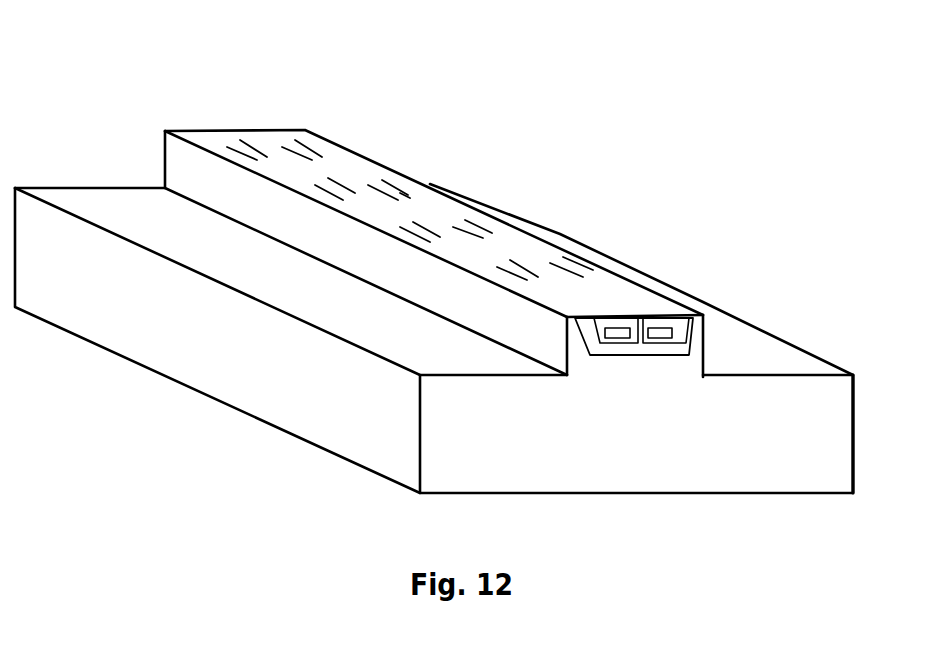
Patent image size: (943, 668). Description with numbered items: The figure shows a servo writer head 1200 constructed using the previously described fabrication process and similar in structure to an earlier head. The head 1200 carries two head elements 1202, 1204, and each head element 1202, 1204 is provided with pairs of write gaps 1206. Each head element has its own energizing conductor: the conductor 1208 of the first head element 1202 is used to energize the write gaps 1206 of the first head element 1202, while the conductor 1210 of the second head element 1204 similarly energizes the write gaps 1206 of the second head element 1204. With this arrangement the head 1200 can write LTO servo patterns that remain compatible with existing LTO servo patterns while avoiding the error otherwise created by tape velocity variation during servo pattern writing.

The servo writer head 1200 is at (441, 283).
The first head element 1202 is at (614, 381).
The second head element 1204 is at (658, 381).
The write gap 1206 is at (324, 138).
The conductor of the first head element 1208 is at (612, 336).
The conductor of the second head element 1210 is at (672, 333).